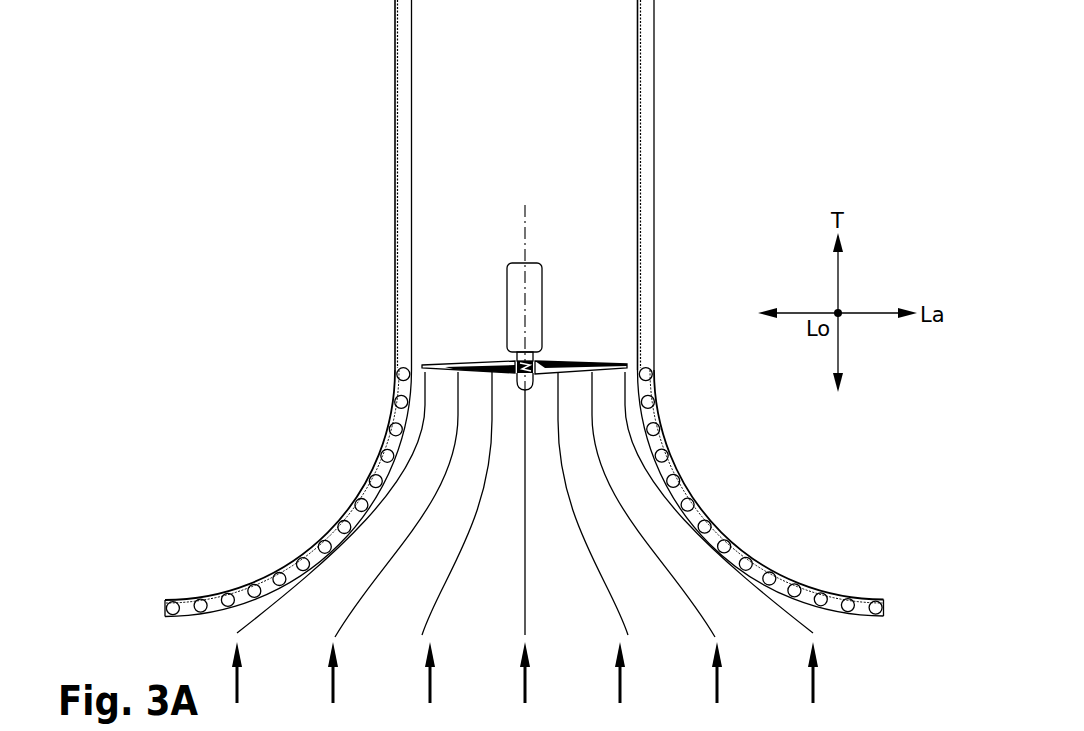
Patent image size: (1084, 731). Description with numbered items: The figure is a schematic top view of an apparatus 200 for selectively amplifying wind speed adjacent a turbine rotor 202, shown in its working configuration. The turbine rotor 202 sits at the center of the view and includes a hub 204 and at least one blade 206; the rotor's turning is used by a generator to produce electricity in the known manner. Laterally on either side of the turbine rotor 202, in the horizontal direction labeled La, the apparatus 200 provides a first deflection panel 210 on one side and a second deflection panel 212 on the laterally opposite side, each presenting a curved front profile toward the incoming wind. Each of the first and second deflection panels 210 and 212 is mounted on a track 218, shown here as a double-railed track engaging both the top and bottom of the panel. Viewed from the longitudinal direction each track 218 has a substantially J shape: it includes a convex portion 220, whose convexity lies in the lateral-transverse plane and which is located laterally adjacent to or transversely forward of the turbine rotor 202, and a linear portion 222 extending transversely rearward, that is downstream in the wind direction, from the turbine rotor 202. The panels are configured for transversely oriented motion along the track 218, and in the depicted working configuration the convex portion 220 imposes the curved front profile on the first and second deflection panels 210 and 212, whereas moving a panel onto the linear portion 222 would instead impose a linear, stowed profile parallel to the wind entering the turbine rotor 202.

The apparatus 200 is at (222, 68).
The turbine rotor 202 is at (492, 141).
The hub 204 is at (535, 282).
The blade 206 is at (571, 362).
The first deflection panel 210 is at (241, 520).
The second deflection panel 212 is at (738, 480).
The track 218 is at (350, 131).
The convex portion 220 is at (303, 493).
The linear portion 222 is at (365, 61).